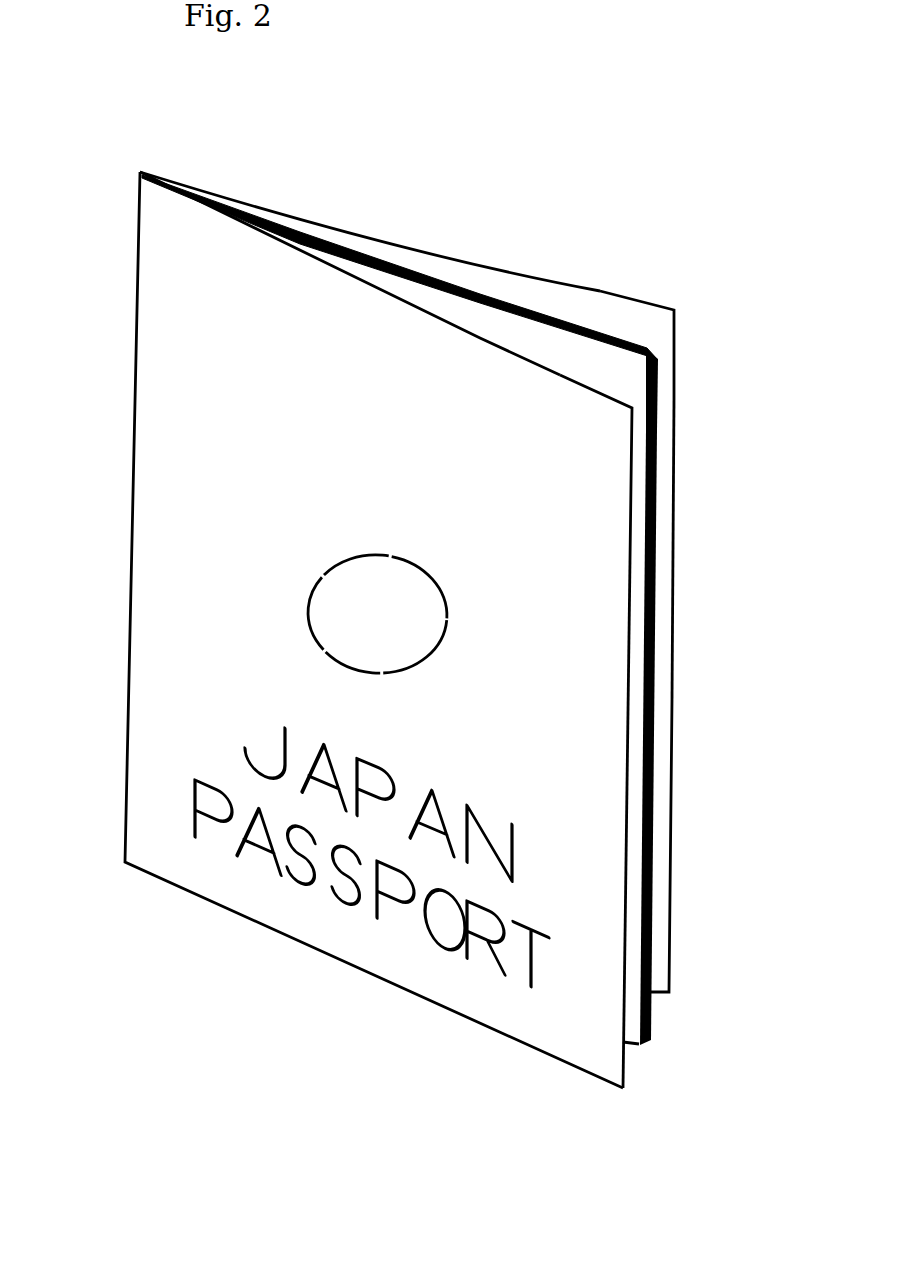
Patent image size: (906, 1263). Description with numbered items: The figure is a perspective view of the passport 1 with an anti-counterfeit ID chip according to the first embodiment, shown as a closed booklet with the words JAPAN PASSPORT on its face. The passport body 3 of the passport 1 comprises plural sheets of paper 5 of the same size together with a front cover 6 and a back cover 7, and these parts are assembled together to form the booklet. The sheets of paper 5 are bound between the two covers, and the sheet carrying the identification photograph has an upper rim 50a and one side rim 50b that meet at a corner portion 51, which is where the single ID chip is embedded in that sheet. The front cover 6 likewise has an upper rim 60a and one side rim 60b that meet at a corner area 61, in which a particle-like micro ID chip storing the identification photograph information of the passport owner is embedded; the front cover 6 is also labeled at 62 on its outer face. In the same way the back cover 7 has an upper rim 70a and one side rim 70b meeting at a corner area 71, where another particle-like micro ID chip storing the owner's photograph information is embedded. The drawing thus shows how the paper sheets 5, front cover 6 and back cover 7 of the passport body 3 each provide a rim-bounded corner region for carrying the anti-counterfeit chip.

The passport with an anti-counterfeit ID chip 1 is at (603, 199).
The passport body 3 is at (129, 543).
The sheets of paper 5 is at (653, 640).
The front cover 6 is at (318, 914).
The back cover 7 is at (668, 790).
The upper rim 50a is at (397, 268).
The side rim 50b is at (658, 713).
The corner portion 51 is at (634, 373).
The upper rim 60a is at (276, 242).
The side rim 60b is at (625, 872).
The corner area 61 is at (613, 420).
The outer surface of front cover 62 is at (202, 677).
The upper rim 70a is at (519, 262).
The side rim 70b is at (676, 538).
The corner area 71 is at (664, 318).